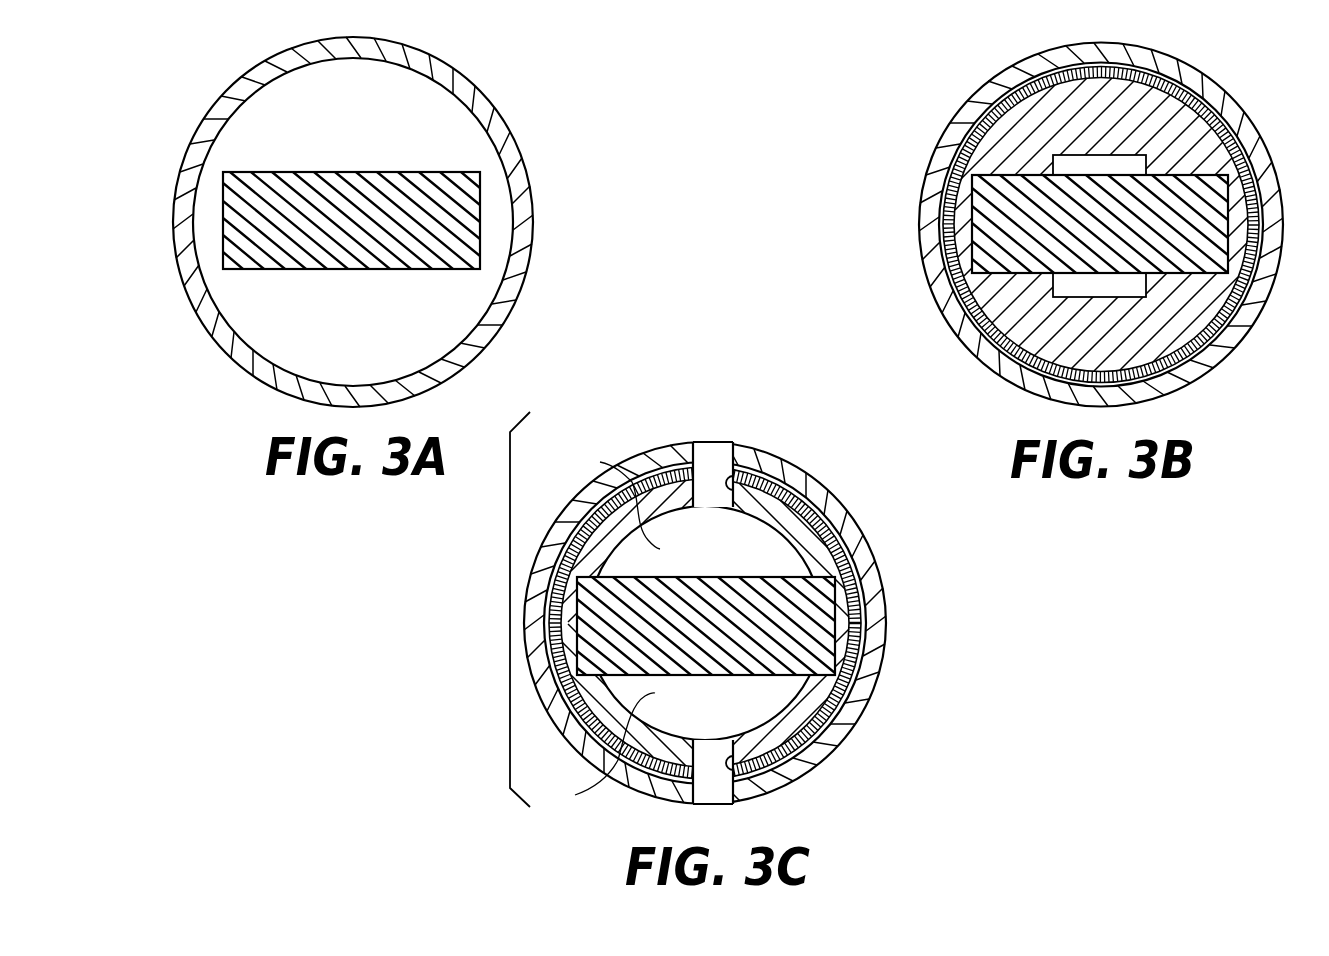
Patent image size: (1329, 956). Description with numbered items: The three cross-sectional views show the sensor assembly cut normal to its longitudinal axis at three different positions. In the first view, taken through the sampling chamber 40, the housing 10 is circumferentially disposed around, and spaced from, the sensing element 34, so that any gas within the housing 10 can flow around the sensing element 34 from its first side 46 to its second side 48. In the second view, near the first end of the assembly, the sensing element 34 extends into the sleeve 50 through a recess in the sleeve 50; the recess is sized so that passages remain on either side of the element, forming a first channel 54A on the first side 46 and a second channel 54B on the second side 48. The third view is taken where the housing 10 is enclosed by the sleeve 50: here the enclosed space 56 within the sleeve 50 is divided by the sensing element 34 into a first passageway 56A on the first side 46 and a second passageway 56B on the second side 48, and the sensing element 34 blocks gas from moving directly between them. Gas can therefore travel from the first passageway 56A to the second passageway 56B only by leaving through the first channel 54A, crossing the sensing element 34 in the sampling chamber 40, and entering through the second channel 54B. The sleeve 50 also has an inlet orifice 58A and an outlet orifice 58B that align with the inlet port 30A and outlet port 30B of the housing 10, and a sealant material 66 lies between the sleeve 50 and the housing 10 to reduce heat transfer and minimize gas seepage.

In FIG. 3A, the housing 10 is at (487, 96).
In FIG. 3B, the housing 10 is at (1185, 75).
In FIG. 3C, the housing 10 is at (838, 506).
In FIG. 3C, the inlet port 30A is at (733, 456).
In FIG. 3C, the outlet port 30B is at (695, 790).
In FIG. 3A, the sensing element 34 is at (457, 207).
In FIG. 3B, the sensing element 34 is at (990, 220).
In FIG. 3C, the sensing element 34 is at (813, 623).
In FIG. 3A, the sampling chamber 40 is at (247, 128).
In FIG. 3A, the first side 46 is at (388, 171).
In FIG. 3B, the first side 46 is at (1180, 173).
In FIG. 3C, the first side 46 is at (775, 573).
In FIG. 3A, the second side 48 is at (270, 270).
In FIG. 3B, the second side 48 is at (1215, 278).
In FIG. 3C, the second side 48 is at (769, 676).
In FIG. 3B, the sleeve 50 is at (1180, 120).
In FIG. 3C, the sleeve 50 is at (858, 556).
In FIG. 3B, the first channel 54A is at (1066, 163).
In FIG. 3B, the second channel 54B is at (1070, 288).
In FIG. 3C, the enclosed space 56 is at (510, 600).
In FIG. 3C, the first passageway 56A is at (606, 495).
In FIG. 3C, the second passageway 56B is at (591, 748).
In FIG. 3C, the inlet orifice 58A is at (733, 484).
In FIG. 3C, the outlet orifice 58B is at (733, 763).
In FIG. 3B, the sealant material 66 is at (1047, 84).
In FIG. 3C, the sealant material 66 is at (850, 663).